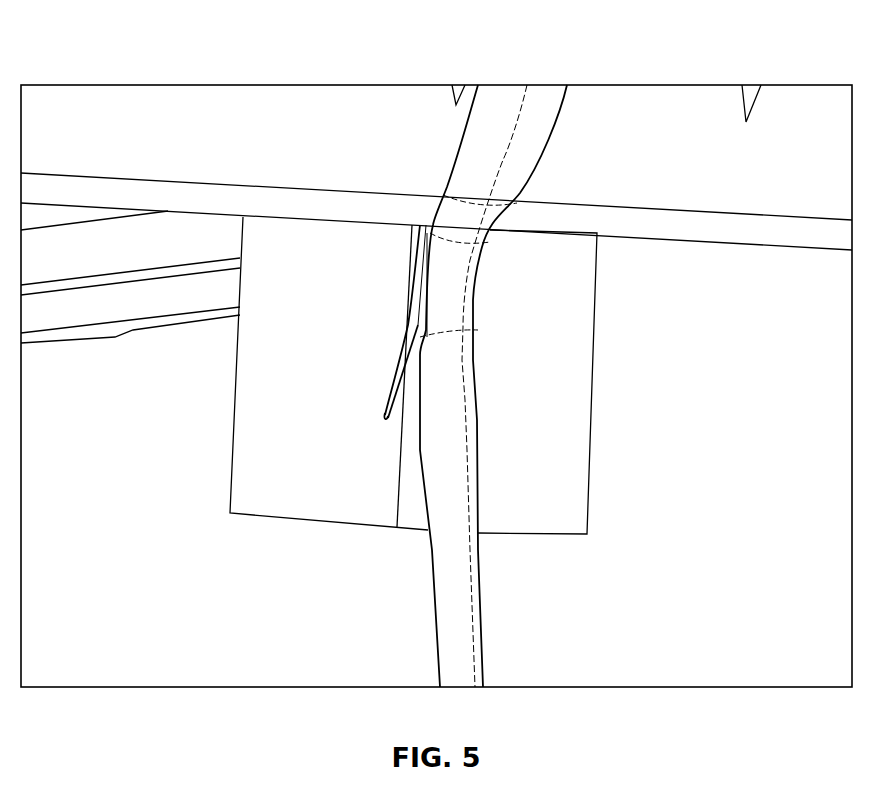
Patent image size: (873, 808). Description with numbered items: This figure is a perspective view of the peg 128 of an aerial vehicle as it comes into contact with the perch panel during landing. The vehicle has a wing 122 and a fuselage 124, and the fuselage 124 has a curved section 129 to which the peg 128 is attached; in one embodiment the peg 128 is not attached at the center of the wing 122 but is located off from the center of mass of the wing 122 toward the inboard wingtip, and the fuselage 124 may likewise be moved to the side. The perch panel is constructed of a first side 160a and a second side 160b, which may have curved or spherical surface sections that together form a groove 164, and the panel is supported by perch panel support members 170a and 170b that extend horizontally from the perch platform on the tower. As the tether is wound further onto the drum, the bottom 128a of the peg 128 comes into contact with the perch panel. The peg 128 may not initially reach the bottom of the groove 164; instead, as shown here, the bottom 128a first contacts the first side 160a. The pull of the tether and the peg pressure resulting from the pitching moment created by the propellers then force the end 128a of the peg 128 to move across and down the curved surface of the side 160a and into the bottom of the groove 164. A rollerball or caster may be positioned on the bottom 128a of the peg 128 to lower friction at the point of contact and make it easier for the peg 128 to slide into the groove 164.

The wing 122 is at (640, 118).
The fuselage 124 is at (452, 469).
The peg 128 is at (393, 375).
The bottom of the peg 128a is at (387, 420).
The curved section 129 is at (448, 263).
The first side of perch panel 160a is at (263, 496).
The second side of perch panel 160b is at (567, 427).
The groove 164 is at (403, 390).
The perch panel support member 170a is at (83, 253).
The perch panel support member 170b is at (155, 302).